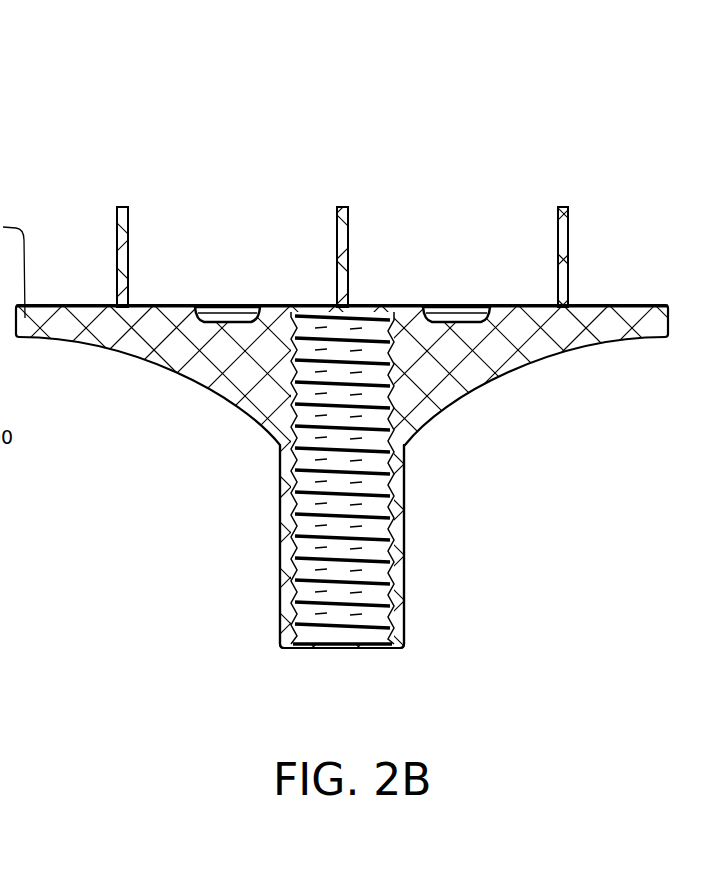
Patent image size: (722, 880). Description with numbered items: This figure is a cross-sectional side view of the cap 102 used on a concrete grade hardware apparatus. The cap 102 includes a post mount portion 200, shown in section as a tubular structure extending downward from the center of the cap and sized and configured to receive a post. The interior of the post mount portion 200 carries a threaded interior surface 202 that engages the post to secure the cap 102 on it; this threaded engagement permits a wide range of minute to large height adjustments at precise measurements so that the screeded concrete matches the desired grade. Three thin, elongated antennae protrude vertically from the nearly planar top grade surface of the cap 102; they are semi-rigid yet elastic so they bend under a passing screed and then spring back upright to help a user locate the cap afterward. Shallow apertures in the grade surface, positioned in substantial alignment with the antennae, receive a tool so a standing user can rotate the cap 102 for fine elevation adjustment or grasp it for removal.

The cap 102 is at (670, 80).
The post mount portion 200 is at (406, 508).
The threaded interior surface 202 is at (360, 648).